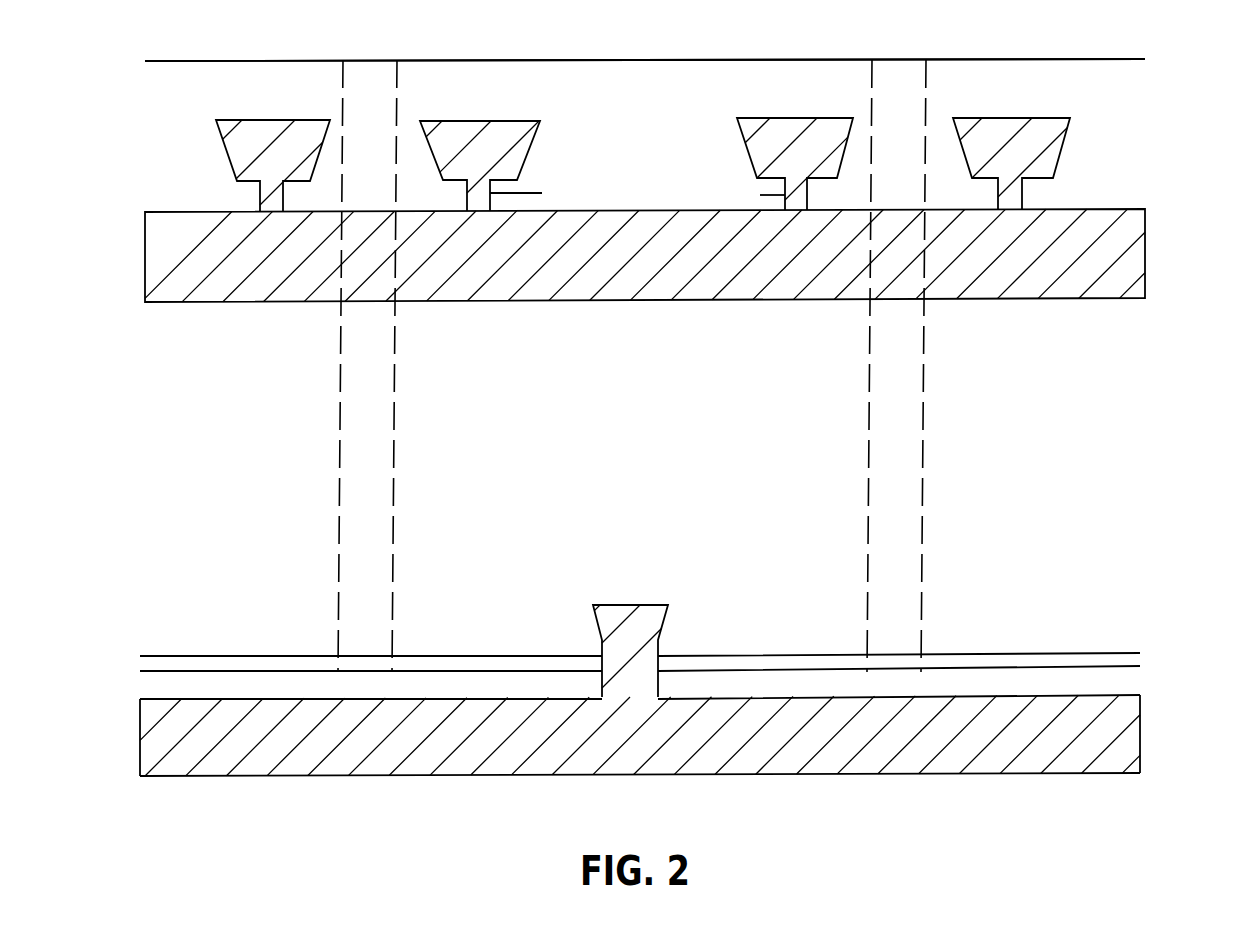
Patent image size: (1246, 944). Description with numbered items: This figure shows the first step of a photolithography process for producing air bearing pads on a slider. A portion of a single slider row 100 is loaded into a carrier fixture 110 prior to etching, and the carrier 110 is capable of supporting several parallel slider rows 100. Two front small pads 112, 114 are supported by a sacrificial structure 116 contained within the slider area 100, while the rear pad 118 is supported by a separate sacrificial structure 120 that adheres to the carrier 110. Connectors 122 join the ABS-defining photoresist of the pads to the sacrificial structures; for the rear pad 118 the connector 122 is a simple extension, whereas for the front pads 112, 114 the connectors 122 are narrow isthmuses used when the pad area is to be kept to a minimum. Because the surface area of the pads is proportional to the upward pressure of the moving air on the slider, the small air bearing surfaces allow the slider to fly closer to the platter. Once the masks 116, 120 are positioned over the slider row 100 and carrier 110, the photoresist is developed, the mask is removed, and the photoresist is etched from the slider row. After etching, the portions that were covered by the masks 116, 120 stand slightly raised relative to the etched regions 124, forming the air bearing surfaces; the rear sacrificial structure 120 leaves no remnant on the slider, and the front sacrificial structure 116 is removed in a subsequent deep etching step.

The slider row 100 is at (1125, 367).
The carrier fixture 110 is at (1147, 44).
The front small pad 112 is at (513, 121).
The front small pad 114 is at (787, 118).
The sacrificial structure 116 is at (1130, 230).
The rear pad 118 is at (650, 605).
The sacrificial structure 120 is at (1132, 718).
The connector 122 is at (542, 193).
The etched region 124 is at (772, 73).